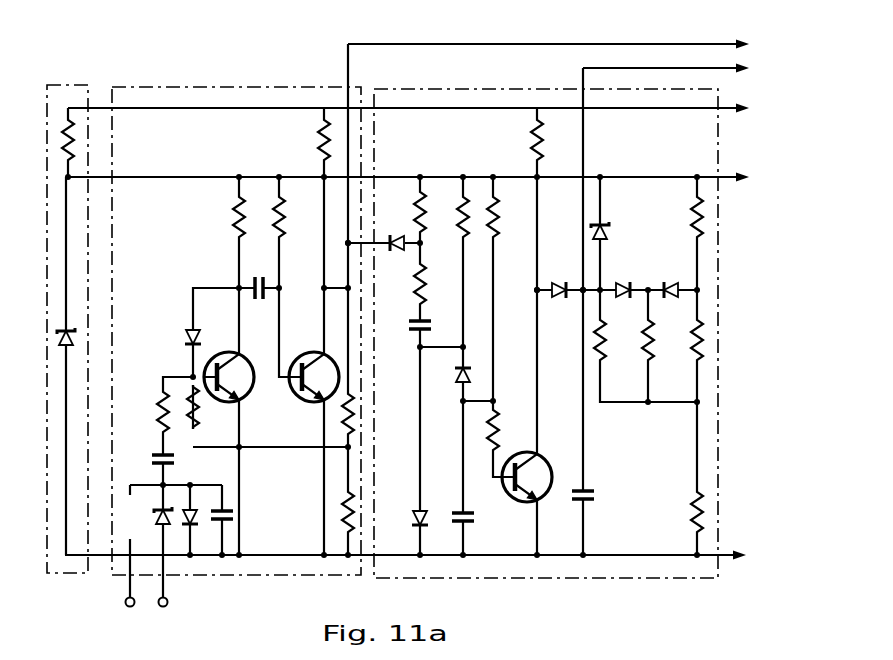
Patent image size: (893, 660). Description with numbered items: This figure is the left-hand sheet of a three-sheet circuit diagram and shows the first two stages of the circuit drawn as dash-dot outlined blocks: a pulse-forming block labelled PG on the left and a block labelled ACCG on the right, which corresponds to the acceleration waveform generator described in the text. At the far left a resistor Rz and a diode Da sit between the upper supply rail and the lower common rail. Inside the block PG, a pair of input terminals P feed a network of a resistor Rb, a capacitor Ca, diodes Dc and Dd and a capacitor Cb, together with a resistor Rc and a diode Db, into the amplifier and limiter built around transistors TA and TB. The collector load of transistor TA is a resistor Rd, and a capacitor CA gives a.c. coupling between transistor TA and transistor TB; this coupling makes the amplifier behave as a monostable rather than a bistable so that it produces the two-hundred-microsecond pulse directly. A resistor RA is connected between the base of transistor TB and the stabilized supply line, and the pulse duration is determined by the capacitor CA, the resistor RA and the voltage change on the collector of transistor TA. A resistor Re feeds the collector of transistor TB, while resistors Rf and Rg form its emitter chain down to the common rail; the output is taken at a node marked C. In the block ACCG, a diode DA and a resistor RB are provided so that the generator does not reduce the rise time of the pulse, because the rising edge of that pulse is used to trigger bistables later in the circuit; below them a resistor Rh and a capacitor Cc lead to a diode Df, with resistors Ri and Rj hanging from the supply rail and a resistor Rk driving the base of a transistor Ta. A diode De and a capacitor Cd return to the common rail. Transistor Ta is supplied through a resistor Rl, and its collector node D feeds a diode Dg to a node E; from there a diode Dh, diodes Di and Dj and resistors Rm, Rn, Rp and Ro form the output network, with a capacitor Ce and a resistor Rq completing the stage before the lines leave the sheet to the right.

The resistor Rz is at (70, 118).
The resistor Re is at (306, 140).
The resistor Rl is at (542, 158).
The resistor Rd is at (236, 222).
The resistor RA is at (283, 228).
The resistor RB is at (425, 200).
The resistor Ri is at (468, 200).
The resistor Rj is at (495, 230).
The resistor Ro is at (694, 222).
The terminal C is at (345, 241).
The diode DA is at (400, 236).
The resistor Rh is at (418, 285).
The capacitor CA is at (262, 283).
The capacitor Cc is at (415, 330).
The diode Da is at (74, 338).
The diode Db is at (184, 338).
The transistor TA is at (238, 358).
The transistor TB is at (318, 403).
The resistor Rb is at (158, 410).
The resistor Rc is at (196, 410).
The capacitor Ca is at (158, 455).
The resistor Rf is at (352, 432).
The resistor Rg is at (345, 513).
The diode Dc is at (158, 508).
The diode Dd is at (193, 508).
The capacitor Cb is at (230, 518).
The diode De is at (414, 510).
The capacitor Cd is at (456, 510).
The diode Df is at (455, 382).
The resistor Rk is at (497, 416).
The transistor Ta is at (544, 462).
The terminal D is at (535, 290).
The diode Dg is at (562, 282).
The terminal E is at (582, 296).
The diode Dh is at (608, 232).
The diode Di is at (626, 284).
The diode Dj is at (672, 284).
The resistor Rm is at (605, 360).
The resistor Rn is at (654, 362).
The resistor Rp is at (690, 340).
The resistor Rq is at (692, 494).
The capacitor Ce is at (590, 490).
The input terminals P is at (147, 605).
The pulse generator PG is at (238, 576).
The AC control generator ACCG is at (603, 579).